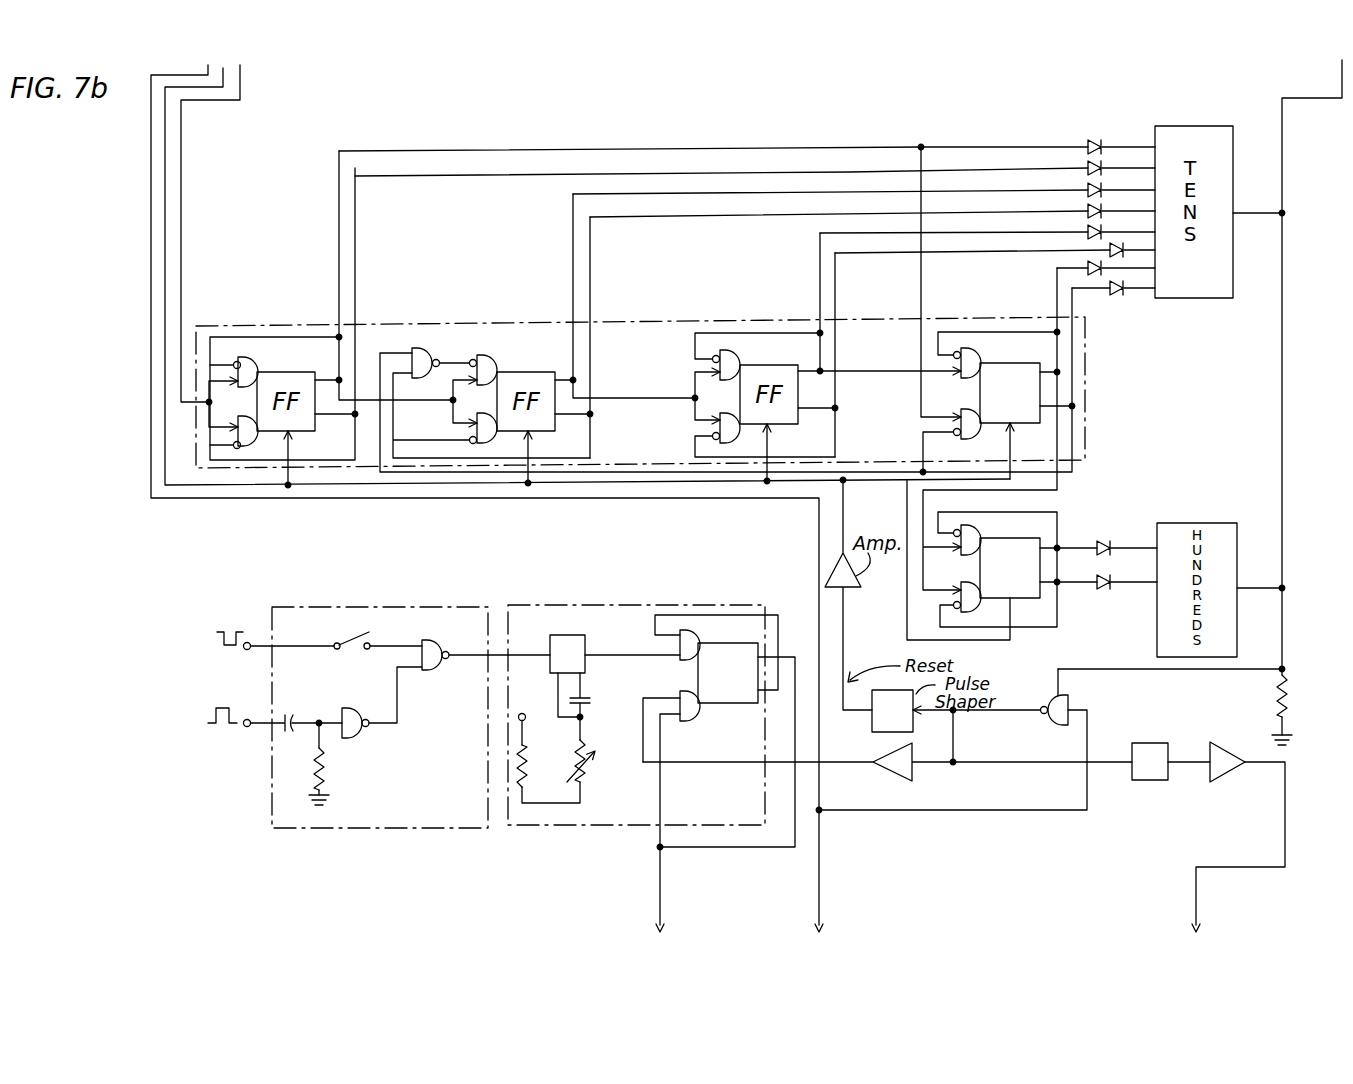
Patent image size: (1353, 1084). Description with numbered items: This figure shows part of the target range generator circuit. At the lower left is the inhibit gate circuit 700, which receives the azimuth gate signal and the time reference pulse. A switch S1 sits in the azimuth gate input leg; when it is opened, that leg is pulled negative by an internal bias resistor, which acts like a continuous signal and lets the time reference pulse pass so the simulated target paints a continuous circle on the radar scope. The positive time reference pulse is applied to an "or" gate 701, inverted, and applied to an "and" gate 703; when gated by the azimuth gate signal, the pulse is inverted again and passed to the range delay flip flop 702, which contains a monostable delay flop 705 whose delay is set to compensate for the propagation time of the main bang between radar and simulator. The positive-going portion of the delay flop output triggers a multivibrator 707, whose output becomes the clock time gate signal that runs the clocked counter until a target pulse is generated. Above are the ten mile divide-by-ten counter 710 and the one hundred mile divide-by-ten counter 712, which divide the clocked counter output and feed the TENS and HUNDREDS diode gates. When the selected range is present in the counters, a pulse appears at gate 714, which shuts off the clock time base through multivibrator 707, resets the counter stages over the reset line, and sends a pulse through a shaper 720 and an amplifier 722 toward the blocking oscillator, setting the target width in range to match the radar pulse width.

The inhibit gate circuit 700 is at (322, 696).
The "or" gate 701 is at (373, 697).
The range delay flip flop 702 is at (651, 708).
The "and" gate 703 is at (449, 642).
The delay flop 705 is at (586, 637).
The multivibrator 707 is at (744, 686).
The divide-by-ten counter 710 is at (1092, 365).
The divide-by-ten counter 712 is at (1092, 530).
The gate 714 is at (1055, 730).
The shaper 720 is at (1178, 724).
The amplifier 722 is at (1256, 726).
The switch S1 is at (352, 630).